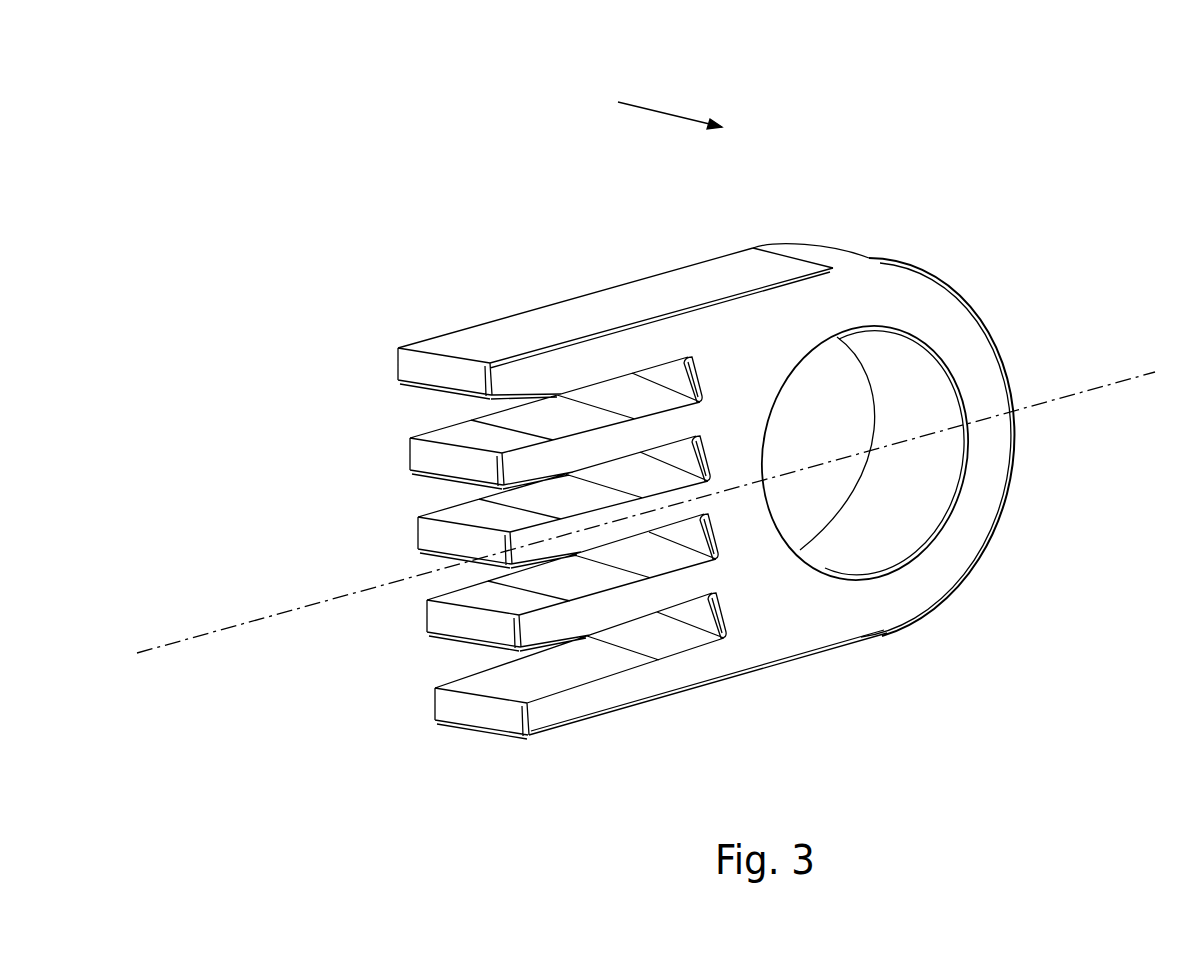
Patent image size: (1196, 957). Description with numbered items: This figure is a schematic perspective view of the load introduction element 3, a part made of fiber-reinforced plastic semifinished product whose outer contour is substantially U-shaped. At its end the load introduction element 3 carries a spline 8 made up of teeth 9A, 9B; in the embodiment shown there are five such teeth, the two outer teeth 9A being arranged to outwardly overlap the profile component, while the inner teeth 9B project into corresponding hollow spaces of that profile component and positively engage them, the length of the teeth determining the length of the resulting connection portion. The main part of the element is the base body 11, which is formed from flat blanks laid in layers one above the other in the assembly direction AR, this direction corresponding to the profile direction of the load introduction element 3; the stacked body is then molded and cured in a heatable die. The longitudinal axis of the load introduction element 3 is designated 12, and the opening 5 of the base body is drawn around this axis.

The load introduction element 3 is at (948, 260).
The bore 5 is at (813, 508).
The spline 8 is at (566, 533).
The outer teeth 9A is at (430, 368).
The inner tooth 9B is at (430, 537).
The base body 11 is at (980, 505).
The longitudinal axis 12 is at (1143, 375).
The assembly direction AR is at (665, 108).